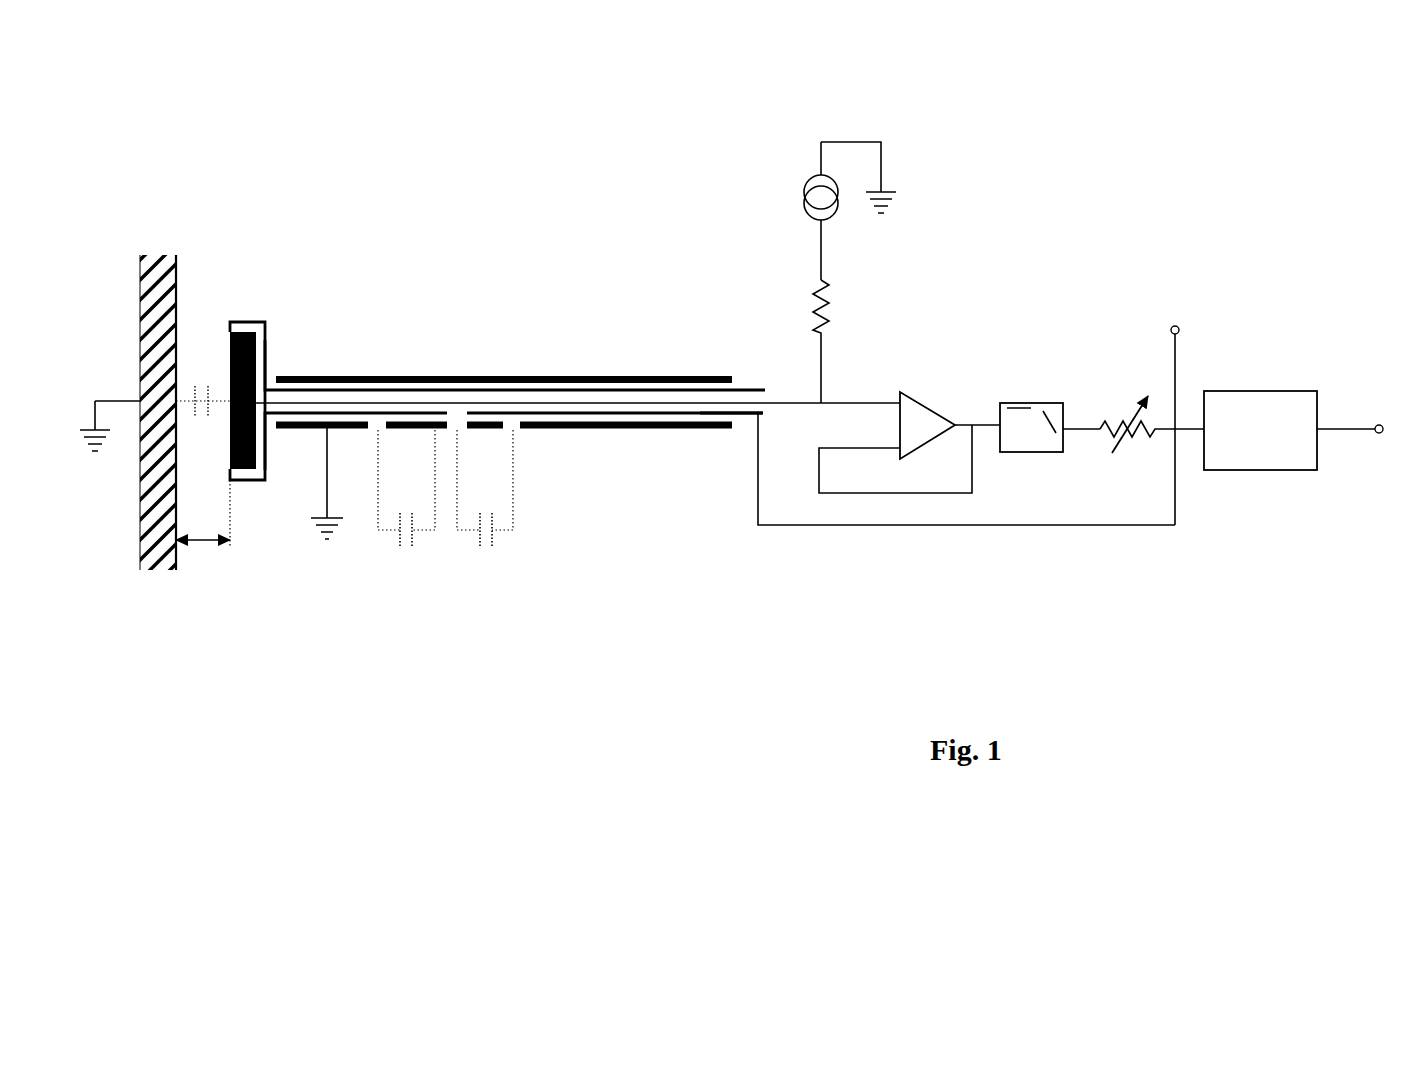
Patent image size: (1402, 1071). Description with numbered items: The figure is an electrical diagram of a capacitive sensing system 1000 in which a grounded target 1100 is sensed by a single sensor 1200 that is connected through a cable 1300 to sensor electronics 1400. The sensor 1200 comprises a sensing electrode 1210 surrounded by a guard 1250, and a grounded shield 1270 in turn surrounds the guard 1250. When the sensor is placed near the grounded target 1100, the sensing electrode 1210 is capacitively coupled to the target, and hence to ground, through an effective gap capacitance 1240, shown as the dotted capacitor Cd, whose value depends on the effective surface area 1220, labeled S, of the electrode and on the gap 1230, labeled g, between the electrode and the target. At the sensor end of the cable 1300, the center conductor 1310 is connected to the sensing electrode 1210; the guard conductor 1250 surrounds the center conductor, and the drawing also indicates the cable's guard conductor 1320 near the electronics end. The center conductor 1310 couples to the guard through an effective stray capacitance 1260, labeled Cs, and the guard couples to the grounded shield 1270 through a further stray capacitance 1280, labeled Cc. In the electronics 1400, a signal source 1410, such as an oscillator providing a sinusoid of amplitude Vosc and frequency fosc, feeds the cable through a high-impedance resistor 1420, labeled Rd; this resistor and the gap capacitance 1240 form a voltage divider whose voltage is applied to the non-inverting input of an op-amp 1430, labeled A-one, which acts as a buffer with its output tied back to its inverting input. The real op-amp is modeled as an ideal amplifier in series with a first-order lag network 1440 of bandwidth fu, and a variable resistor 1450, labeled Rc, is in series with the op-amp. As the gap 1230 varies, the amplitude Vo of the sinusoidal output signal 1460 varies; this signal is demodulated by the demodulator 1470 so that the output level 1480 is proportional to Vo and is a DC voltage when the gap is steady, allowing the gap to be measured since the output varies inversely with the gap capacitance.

The capacitive sensing system 1000 is at (186, 186).
The grounded target 1100 is at (158, 572).
The sensor 1200 is at (260, 495).
The sensing electrode 1210 is at (250, 327).
The effective surface area 1220 is at (224, 352).
The gap 1230 is at (203, 541).
The gap capacitance 1240 is at (203, 403).
The guard 1250 is at (270, 360).
The stray capacitance 1260 is at (488, 518).
The grounded shield 1270 is at (374, 371).
The stray capacitance 1280 is at (409, 518).
The cable 1300 is at (564, 445).
The center conductor 1310 is at (610, 397).
The cable guard/shield conductor 1320 is at (745, 421).
The sensor electronics 1400 is at (963, 543).
The signal source 1410 is at (726, 211).
The resistor 1420 is at (762, 338).
The op-amp 1430 is at (909, 424).
The first-order lag network 1440 is at (1050, 447).
The variable resistor 1450 is at (1152, 434).
The sinusoidal output signal 1460 is at (1188, 402).
The demodulator 1470 is at (1260, 453).
The output level 1480 is at (1358, 433).